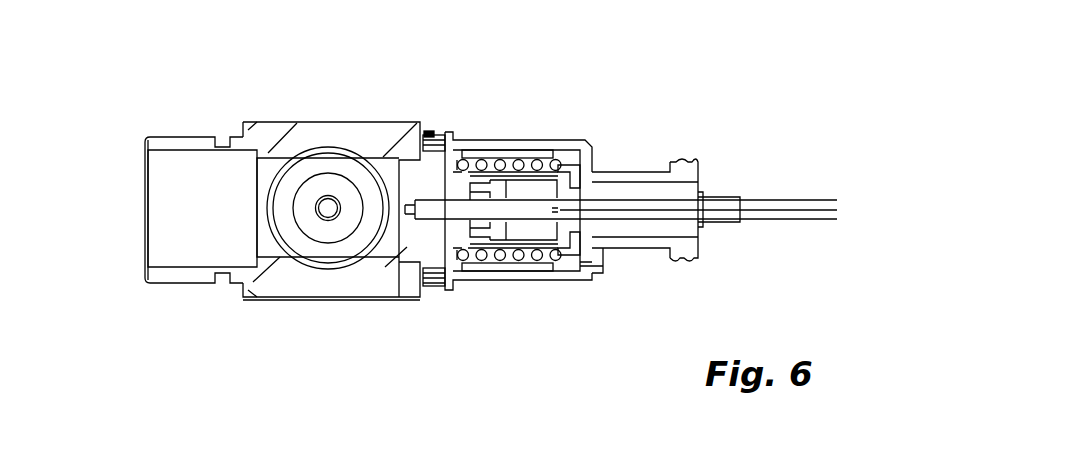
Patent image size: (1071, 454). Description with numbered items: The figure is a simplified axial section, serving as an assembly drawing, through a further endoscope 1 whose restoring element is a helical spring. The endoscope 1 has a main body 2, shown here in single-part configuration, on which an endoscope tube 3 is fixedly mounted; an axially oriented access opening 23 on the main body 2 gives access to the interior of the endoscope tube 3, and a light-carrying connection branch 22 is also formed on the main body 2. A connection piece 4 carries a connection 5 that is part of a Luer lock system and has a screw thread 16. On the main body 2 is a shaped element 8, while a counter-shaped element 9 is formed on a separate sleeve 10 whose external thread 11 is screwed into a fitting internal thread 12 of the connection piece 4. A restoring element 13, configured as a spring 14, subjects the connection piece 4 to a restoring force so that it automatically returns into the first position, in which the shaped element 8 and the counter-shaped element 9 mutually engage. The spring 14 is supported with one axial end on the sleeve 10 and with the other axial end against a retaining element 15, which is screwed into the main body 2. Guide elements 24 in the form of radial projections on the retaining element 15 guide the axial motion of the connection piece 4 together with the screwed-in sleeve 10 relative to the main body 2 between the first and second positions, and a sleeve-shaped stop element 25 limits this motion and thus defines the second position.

The endoscope 1 is at (253, 345).
The main body 2 is at (393, 292).
The endoscope tube 3 is at (774, 219).
The connection piece 4 is at (563, 274).
The connection 5 is at (682, 266).
The shaped element 8 is at (428, 130).
The counter-shaped element 9 is at (442, 132).
The sleeve 10 is at (460, 137).
The external thread 11 is at (542, 149).
The internal thread 12 is at (505, 273).
The restoring element 13 is at (535, 268).
The spring 14 is at (480, 258).
The retaining element 15 is at (574, 178).
The screw thread 16 is at (691, 158).
The light-carrying connection branch 22 is at (325, 262).
The access opening 23 is at (188, 213).
The guide elements 24 is at (590, 273).
The stop element 25 is at (492, 170).